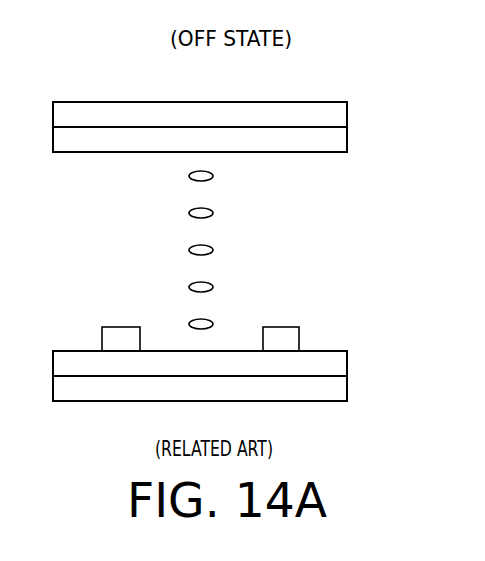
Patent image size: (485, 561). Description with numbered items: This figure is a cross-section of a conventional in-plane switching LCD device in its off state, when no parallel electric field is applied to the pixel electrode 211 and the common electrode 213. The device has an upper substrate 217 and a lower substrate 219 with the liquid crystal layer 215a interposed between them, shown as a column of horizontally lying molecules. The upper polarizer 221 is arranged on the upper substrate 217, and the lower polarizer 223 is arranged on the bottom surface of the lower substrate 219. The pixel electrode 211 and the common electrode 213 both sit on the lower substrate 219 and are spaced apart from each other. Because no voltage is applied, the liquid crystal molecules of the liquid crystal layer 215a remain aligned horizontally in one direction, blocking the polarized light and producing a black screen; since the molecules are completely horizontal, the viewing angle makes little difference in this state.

The upper polarizer 221 is at (347, 118).
The upper substrate 217 is at (347, 145).
The liquid crystal layer 215a is at (218, 231).
The pixel electrode 211 is at (123, 327).
The common electrode 213 is at (285, 327).
The lower substrate 219 is at (347, 363).
The lower polarizer 223 is at (347, 388).